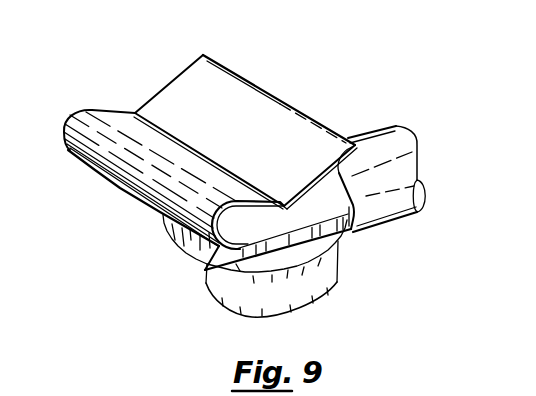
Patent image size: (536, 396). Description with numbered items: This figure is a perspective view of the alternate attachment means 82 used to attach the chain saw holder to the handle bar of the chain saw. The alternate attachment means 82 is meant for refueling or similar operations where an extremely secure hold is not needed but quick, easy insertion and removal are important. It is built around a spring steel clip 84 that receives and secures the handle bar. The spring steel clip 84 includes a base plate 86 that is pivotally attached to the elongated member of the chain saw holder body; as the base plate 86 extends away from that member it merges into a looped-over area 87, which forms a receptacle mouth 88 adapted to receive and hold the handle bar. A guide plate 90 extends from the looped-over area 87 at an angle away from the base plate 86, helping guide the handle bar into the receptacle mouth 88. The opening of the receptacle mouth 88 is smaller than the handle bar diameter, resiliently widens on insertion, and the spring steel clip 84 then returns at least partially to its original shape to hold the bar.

The alternate attachment means 82 is at (289, 74).
The spring steel clip 84 is at (158, 77).
The base plate 86 is at (337, 208).
The looped-over area 87 is at (64, 129).
The receptacle mouth 88 is at (242, 225).
The guide plate 90 is at (269, 134).